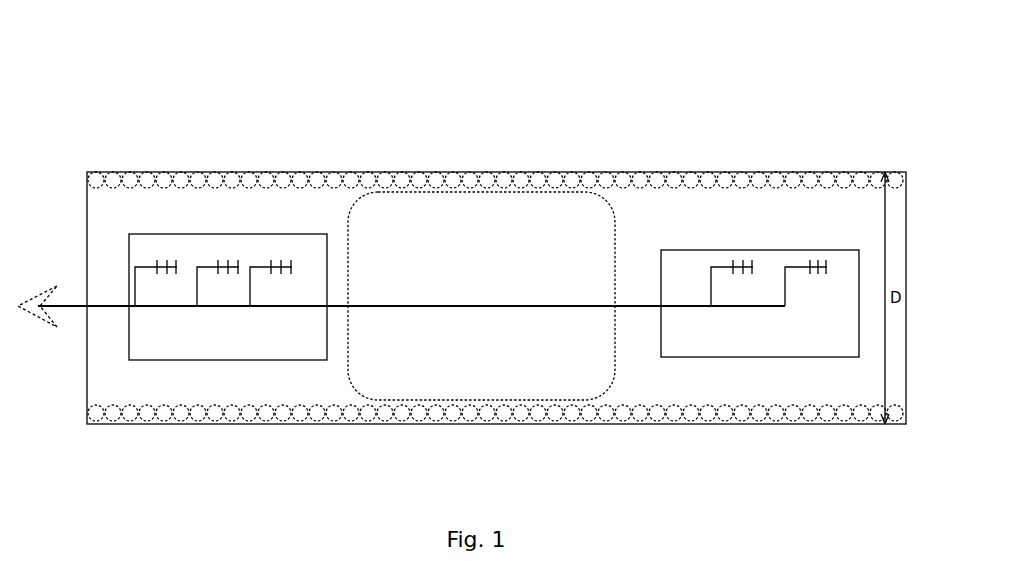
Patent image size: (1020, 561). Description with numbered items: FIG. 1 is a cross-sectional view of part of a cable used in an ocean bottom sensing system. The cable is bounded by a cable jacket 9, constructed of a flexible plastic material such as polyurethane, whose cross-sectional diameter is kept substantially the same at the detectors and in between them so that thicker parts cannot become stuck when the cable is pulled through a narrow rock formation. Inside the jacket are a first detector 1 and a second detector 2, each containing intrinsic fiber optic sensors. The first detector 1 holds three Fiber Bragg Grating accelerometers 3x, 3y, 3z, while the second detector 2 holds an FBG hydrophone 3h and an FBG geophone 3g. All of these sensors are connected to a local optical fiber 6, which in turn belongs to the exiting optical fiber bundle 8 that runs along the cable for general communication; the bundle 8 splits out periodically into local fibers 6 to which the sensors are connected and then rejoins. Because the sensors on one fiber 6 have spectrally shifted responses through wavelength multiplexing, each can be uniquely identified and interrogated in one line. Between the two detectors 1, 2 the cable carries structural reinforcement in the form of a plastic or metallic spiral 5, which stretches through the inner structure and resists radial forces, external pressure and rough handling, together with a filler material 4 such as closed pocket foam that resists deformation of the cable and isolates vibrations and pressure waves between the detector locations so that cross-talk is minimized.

The first detector 1 is at (141, 234).
The second detector 2 is at (760, 250).
The FBG accelerometer 3x is at (157, 267).
The FBG accelerometer 3y is at (218, 267).
The FBG accelerometer 3z is at (271, 267).
The FBG hydrophone 3h is at (723, 267).
The FBG geophone 3g is at (800, 267).
The filler material 4 is at (432, 192).
The spiral 5 is at (520, 185).
The optical fiber 6 is at (163, 306).
The optical fiber bundle 8 is at (57, 306).
The cable jacket 9 is at (851, 176).